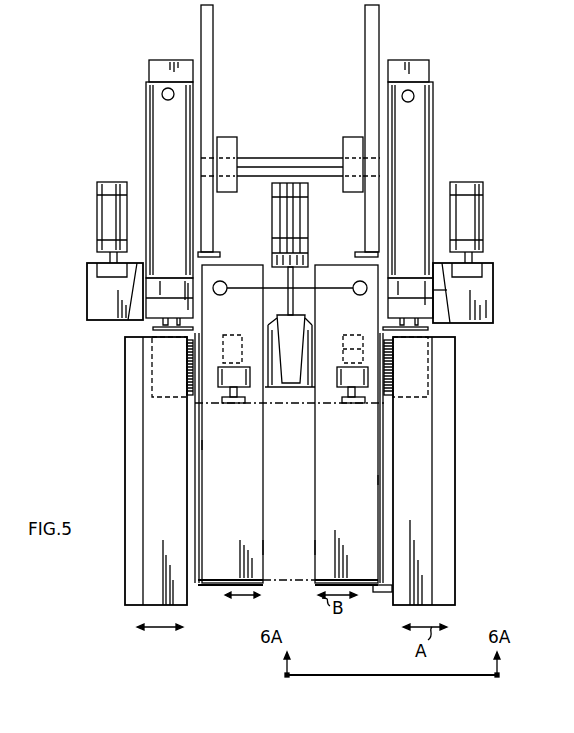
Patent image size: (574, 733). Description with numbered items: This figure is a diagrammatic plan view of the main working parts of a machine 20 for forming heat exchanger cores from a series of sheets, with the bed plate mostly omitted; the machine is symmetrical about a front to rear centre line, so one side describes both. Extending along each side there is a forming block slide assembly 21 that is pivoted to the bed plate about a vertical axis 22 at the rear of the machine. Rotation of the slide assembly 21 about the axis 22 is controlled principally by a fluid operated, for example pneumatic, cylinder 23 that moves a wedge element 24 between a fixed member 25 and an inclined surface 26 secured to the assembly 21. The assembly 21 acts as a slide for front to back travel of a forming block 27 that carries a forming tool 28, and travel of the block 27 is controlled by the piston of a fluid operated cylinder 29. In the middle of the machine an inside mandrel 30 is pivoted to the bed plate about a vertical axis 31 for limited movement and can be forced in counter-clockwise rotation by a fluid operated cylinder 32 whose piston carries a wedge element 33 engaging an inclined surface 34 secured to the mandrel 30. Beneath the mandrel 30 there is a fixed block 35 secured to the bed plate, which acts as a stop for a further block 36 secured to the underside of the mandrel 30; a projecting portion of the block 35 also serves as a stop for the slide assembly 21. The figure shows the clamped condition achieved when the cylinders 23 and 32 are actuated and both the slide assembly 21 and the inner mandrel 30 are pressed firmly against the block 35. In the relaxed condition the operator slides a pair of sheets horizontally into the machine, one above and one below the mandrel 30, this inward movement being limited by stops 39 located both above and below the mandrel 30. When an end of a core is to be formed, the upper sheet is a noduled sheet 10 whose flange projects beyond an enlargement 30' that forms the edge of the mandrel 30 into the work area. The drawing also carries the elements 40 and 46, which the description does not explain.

The machine 20 is at (100, 85).
The vertical axis 22 is at (403, 95).
The fluid operated cylinder 29 is at (405, 120).
The shaft with hubs 40 is at (255, 163).
The fluid operated cylinder 23 is at (107, 211).
The wedge element 24 is at (101, 298).
The fixed member 25 is at (490, 313).
The inclined surface 26 is at (447, 290).
The fluid operated cylinder 32 is at (283, 222).
The vertical axis 31 is at (226, 288).
The wedge element 33 is at (288, 333).
The inclined surface 34 is at (303, 340).
The fixed block 35 is at (373, 340).
The block 36 is at (347, 358).
The stops 39 is at (350, 403).
The forming block slide assembly 21 is at (130, 465).
The forming block 27 is at (153, 328).
The forming tool 28 is at (395, 377).
The enlargement 30' is at (290, 477).
The inside mandrel 30 is at (292, 546).
The noduled sheet 10 is at (288, 574).
The connector 46 is at (385, 592).